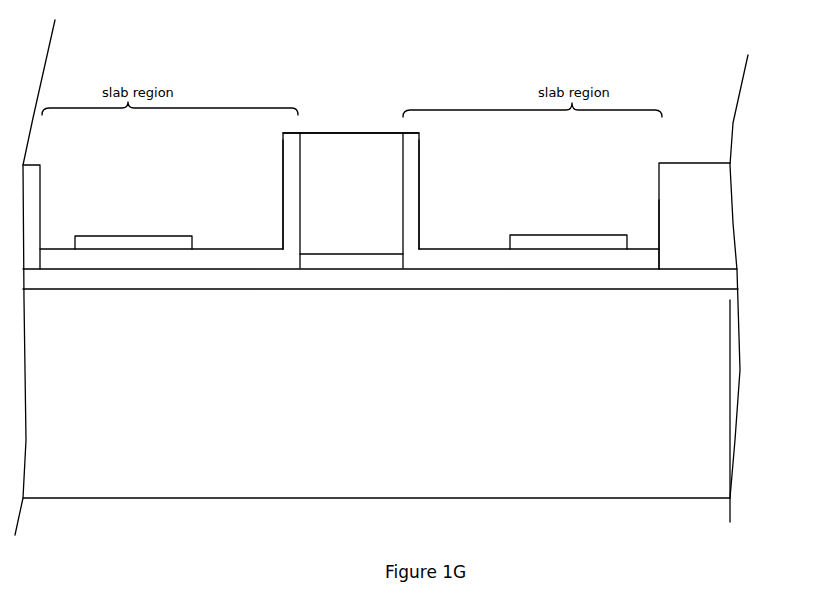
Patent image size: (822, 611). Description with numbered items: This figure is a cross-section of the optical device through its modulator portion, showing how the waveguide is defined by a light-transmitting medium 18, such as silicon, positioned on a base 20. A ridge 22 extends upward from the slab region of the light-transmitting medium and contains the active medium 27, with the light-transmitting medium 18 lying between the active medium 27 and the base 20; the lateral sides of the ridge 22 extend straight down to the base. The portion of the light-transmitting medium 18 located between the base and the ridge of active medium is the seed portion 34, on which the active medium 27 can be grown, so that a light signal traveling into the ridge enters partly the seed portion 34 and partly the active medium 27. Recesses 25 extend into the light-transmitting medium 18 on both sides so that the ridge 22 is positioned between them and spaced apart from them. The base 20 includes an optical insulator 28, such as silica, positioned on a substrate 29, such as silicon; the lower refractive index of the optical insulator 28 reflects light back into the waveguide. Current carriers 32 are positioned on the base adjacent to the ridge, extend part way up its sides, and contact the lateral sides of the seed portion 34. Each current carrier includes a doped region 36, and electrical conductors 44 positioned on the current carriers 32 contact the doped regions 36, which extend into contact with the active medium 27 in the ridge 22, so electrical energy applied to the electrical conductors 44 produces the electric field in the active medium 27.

The light-transmitting medium 18 is at (315, 262).
The base 20 is at (747, 498).
The ridge 22 is at (403, 117).
The recesses 25 is at (41, 212).
The active medium 27 is at (352, 160).
The optical insulator 28 is at (698, 280).
The substrate 29 is at (135, 482).
The current carriers 32 is at (283, 153).
The seed portion 34 is at (660, 297).
The doped regions 36 is at (272, 258).
The electrical conductors 44 is at (130, 235).